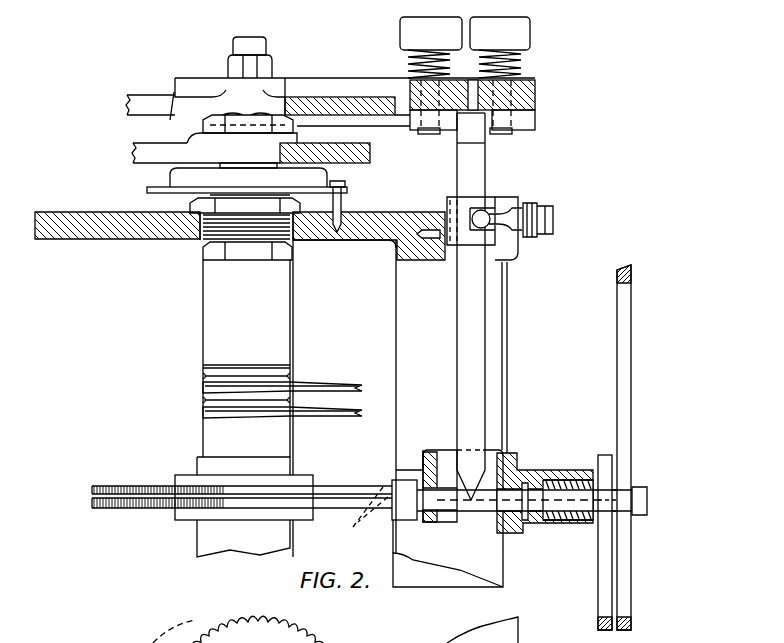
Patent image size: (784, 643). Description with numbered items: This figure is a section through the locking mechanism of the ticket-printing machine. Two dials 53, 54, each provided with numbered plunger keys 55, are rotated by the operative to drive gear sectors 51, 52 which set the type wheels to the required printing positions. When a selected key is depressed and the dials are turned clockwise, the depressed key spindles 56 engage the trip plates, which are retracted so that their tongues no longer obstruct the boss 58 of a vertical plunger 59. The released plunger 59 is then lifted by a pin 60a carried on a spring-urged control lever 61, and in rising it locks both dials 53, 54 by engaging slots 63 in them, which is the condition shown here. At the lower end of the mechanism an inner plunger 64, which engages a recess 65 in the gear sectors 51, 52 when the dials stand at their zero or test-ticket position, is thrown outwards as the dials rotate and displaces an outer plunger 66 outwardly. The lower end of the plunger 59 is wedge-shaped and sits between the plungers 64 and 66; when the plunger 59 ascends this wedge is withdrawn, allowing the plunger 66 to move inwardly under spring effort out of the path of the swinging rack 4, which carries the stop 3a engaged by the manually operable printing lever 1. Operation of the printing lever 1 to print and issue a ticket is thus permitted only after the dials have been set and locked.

The printing lever 1 is at (620, 339).
The stop 3a is at (628, 520).
The swinging rack 4 is at (600, 558).
The gear sector 51 is at (100, 485).
The gear sector 52 is at (99, 509).
The dial 53 is at (532, 96).
The dial 54 is at (362, 86).
The plunger key 55 is at (465, 47).
The key spindle 56 is at (432, 134).
The boss 58 is at (488, 198).
The vertical plunger 59 is at (471, 306).
The pin 60a is at (512, 210).
The control lever 61 is at (555, 218).
The slot 63 is at (530, 121).
The inner plunger 64 is at (404, 500).
The recess 65 is at (295, 465).
The outer plunger 66 is at (493, 510).